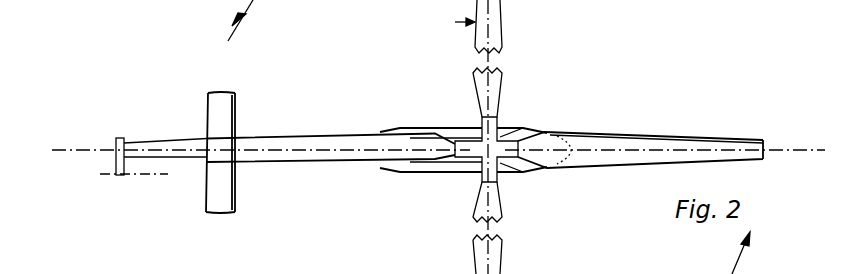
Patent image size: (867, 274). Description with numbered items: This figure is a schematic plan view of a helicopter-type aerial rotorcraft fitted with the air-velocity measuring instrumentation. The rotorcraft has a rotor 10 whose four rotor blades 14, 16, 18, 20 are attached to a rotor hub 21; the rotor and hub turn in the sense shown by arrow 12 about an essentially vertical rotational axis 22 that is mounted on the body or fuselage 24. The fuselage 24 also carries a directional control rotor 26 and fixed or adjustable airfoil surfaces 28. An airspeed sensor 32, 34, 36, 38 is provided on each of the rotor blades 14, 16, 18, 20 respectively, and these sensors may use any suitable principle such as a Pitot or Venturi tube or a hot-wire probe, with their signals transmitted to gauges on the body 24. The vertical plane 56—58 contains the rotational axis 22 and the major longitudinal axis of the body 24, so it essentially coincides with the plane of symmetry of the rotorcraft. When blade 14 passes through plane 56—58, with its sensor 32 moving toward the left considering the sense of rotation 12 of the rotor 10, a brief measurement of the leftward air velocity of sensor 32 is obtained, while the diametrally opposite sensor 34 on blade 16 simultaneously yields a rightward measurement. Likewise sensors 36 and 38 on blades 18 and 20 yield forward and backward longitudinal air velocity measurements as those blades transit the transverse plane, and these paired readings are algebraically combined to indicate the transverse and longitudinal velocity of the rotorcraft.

The rotor 10 is at (505, 128).
The arrow 12 is at (259, 20).
The rotor blade 14 is at (668, 132).
The rotor blade 16 is at (330, 137).
The rotor blade 18 is at (503, 210).
The rotor blade 20 is at (502, 18).
The rotor hub 21 is at (509, 163).
The rotational axis 22 is at (480, 157).
The body or fuselage 24 is at (455, 128).
The directional control rotor 26 is at (118, 174).
The airfoil surfaces 28 is at (205, 95).
The airspeed sensor 32 is at (749, 130).
The airspeed sensor 34 is at (216, 158).
The airspeed sensor 36 is at (505, 273).
The airspeed sensor 38 is at (451, 23).
The vertical plane 56 is at (665, 140).
The vertical plane 58 is at (82, 145).